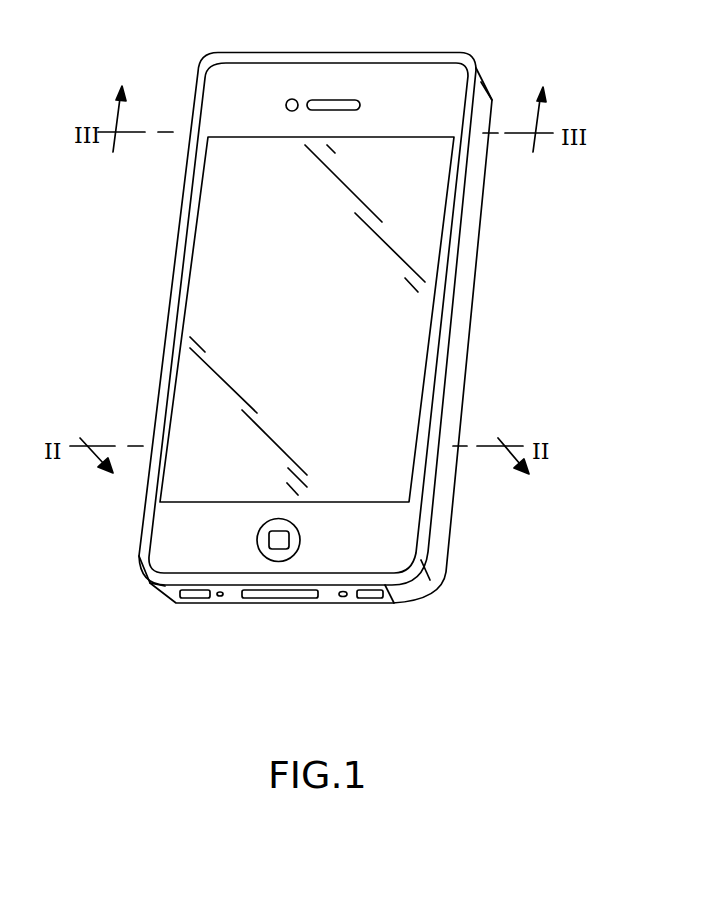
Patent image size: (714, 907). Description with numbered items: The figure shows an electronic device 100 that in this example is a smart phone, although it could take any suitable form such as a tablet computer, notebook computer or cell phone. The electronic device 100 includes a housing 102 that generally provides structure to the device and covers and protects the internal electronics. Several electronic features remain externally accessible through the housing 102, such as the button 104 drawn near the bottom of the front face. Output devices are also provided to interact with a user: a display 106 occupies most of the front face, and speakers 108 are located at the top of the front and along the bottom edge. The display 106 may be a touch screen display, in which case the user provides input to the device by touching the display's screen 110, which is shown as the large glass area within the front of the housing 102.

The electronic device 100 is at (303, 343).
The housing 102 is at (150, 549).
The button 104 is at (271, 546).
The display 106 is at (427, 232).
The speakers 108 is at (347, 100).
The screen 110 is at (220, 157).